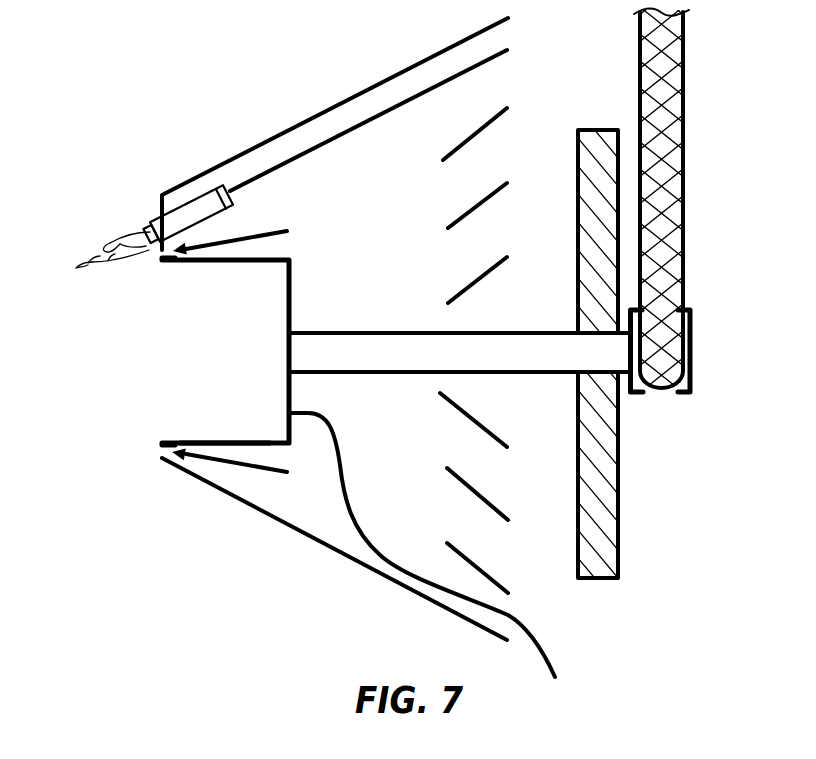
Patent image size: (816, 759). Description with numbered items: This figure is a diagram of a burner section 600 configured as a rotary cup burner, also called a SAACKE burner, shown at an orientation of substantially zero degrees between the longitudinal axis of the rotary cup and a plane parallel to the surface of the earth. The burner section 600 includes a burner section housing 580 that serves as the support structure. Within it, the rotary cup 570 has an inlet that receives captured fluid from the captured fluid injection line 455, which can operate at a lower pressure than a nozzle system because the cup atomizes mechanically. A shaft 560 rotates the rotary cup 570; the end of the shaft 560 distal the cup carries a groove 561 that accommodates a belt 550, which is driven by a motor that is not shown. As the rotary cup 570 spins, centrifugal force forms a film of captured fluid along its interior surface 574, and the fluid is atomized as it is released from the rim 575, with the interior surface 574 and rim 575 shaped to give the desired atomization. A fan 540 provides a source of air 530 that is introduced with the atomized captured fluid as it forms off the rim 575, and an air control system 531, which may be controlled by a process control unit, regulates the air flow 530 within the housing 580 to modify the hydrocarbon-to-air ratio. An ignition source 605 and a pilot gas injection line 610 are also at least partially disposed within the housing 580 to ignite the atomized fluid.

The burner section 600 is at (112, 89).
The ignition source 605 is at (160, 226).
The pilot gas injection line 610 is at (322, 140).
The air 530 is at (272, 228).
The air control system 531 is at (447, 302).
The belt 550 is at (670, 101).
The fan 540 is at (612, 535).
The shaft 560 is at (385, 343).
The groove 561 is at (658, 391).
The rotary cup 570 is at (293, 290).
The interior surface 574 is at (222, 441).
The rim 575 is at (160, 262).
The burner section housing 580 is at (308, 540).
The captured fluid injection line 455 is at (528, 636).